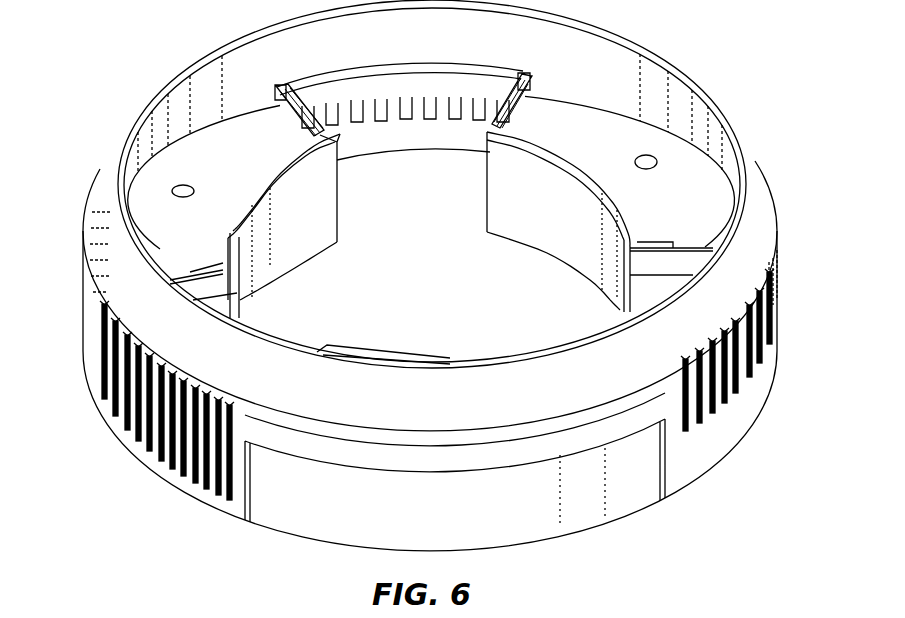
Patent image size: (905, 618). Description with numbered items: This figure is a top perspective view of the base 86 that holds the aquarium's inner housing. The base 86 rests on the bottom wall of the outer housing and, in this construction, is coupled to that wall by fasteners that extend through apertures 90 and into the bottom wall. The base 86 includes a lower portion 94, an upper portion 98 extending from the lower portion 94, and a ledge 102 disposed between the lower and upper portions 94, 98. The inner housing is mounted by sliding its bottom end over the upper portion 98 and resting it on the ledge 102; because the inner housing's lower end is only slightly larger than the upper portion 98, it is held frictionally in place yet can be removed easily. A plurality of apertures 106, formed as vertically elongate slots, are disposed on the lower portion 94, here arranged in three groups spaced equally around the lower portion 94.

The base 86 is at (118, 86).
The apertures 90 is at (183, 186).
The lower portion 94 is at (695, 465).
The upper portion 98 is at (733, 278).
The ledge 102 is at (778, 322).
The apertures 106 is at (185, 408).